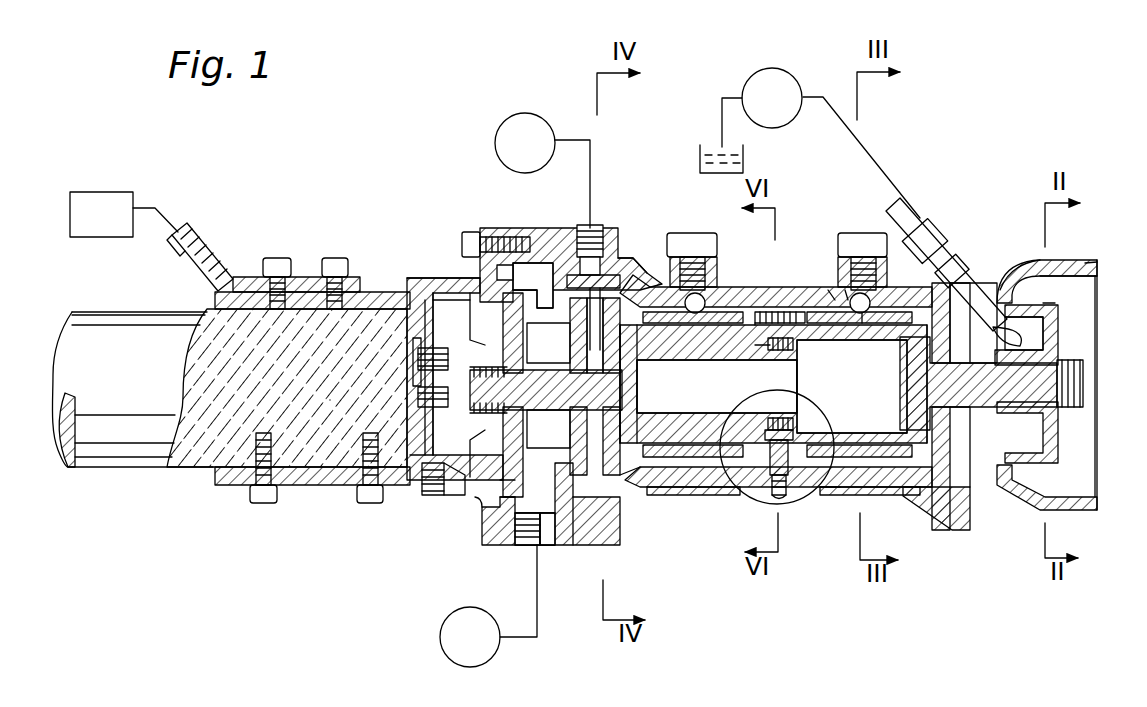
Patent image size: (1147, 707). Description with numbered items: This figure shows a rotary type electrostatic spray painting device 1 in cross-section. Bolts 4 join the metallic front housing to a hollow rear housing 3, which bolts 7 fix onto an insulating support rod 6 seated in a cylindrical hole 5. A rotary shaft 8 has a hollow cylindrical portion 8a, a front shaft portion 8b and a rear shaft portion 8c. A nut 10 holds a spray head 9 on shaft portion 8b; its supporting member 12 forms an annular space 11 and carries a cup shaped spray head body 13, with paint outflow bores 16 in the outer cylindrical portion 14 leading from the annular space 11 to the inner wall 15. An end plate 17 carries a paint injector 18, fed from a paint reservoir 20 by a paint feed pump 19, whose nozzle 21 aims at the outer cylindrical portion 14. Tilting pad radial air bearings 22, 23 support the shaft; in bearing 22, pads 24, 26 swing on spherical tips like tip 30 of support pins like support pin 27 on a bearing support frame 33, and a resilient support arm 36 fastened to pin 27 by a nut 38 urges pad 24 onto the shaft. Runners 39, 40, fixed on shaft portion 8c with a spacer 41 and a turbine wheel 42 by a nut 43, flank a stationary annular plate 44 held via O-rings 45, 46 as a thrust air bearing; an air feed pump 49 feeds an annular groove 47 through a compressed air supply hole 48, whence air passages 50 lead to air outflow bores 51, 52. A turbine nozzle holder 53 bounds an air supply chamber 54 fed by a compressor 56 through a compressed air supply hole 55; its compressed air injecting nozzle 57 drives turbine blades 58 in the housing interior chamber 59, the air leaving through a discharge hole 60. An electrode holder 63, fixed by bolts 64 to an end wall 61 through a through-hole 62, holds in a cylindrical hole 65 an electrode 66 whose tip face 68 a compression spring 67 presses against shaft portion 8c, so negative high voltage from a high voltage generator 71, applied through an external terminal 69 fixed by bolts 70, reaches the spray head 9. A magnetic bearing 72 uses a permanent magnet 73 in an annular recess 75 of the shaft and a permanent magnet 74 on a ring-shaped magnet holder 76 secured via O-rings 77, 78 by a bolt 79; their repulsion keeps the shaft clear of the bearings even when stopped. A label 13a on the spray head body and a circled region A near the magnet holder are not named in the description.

The rotary type electrostatic spray painting device 1 is at (618, 218).
The rear housing 3 is at (410, 278).
The bolts 4 is at (468, 232).
The cylindrical hole 5 is at (298, 487).
The support rod 6 is at (121, 468).
The bolts 7 is at (370, 503).
The rotary shaft 8 is at (698, 362).
The hollow cylindrical portion 8a is at (717, 386).
The shaft portion 8b is at (985, 432).
The shaft portion 8c is at (455, 484).
The spray head 9 is at (1099, 262).
The nut 10 is at (1058, 407).
The annular space 11 is at (1033, 340).
The spray head supporting member 12 is at (1047, 360).
The spray head body 13 is at (1055, 262).
The chuck wall edge 13a is at (1062, 263).
The outer cylindrical portion 14 is at (1025, 328).
The inner wall 15 is at (1047, 300).
The paint outflow bores 16 is at (1045, 302).
The end plate 17 is at (962, 515).
The paint injector 18 is at (940, 215).
The paint feed pump 19 is at (788, 68).
The paint reservoir 20 is at (747, 157).
The nozzle 21 is at (985, 322).
The tilting pad radial air bearing 22 is at (792, 286).
The tilting pad radial air bearing 23 is at (714, 268).
The pad 24 is at (805, 310).
The pad 26 is at (833, 495).
The support pin 27 is at (838, 335).
The spherical tip 30 is at (866, 320).
The bearing support frame 33 is at (846, 288).
The support arm 36 is at (830, 288).
The nut 38 is at (862, 236).
The runner 39 is at (637, 480).
The runner 40 is at (600, 492).
The spacer 41 is at (570, 423).
The turbine wheel 42 is at (496, 325).
The nut 43 is at (500, 362).
The stationary annular plate 44 is at (612, 505).
The O-ring 45 is at (642, 270).
The O-ring 46 is at (548, 262).
The annular groove 47 is at (622, 262).
The compressed air supply hole 48 is at (588, 225).
The air feed pump 49 is at (532, 113).
The air passages 50 is at (550, 312).
The air outflow bores 51 is at (570, 343).
The air outflow bores 52 is at (640, 357).
The turbine nozzle holder 53 is at (573, 510).
The air supply chamber 54 is at (545, 547).
The compressed air supply hole 55 is at (528, 547).
The compressor 56 is at (440, 640).
The compressed air injecting nozzle 57 is at (505, 522).
The turbine blades 58 is at (490, 497).
The housing interior chamber 59 is at (470, 482).
The discharge hole 60 is at (446, 496).
The end wall 61 is at (427, 298).
The through-hole 62 is at (418, 478).
The electrode holder 63 is at (395, 385).
The bolts 64 is at (414, 345).
The cylindrical hole 65 is at (455, 362).
The electrode 66 is at (462, 408).
The compression spring 67 is at (403, 370).
The tip face 68 is at (493, 413).
The external terminal 69 is at (190, 228).
The bolts 70 is at (330, 258).
The high voltage generator 71 is at (100, 240).
The magnetic bearing 72 is at (722, 358).
The permanent magnet 73 is at (795, 343).
The permanent magnet 74 is at (782, 310).
The annular recess 75 is at (765, 348).
The magnet holder 76 is at (720, 298).
The O-ring 77 is at (772, 480).
The O-ring 78 is at (790, 475).
The bolt 79 is at (783, 498).
The valve detail region A is at (742, 500).